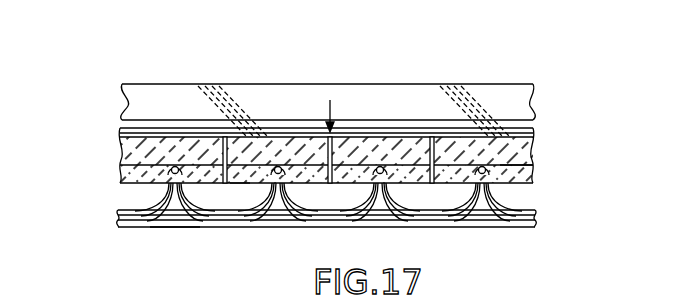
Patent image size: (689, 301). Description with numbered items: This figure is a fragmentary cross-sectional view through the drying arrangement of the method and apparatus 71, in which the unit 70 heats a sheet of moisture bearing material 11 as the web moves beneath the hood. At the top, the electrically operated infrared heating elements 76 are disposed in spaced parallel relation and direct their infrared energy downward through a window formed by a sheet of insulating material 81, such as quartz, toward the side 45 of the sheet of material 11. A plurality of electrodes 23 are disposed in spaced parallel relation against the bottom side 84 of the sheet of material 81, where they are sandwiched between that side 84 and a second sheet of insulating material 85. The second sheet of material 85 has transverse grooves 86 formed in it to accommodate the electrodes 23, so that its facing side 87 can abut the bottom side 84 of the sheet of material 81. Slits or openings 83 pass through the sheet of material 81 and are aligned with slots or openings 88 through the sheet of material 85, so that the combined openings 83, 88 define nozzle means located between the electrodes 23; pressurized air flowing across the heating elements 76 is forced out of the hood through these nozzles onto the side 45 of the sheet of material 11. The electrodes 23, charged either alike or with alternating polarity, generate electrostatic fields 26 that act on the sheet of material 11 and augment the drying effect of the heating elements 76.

The unit 70 is at (540, 76).
The method and apparatus 71 is at (402, 74).
The infrared heating elements 76 is at (258, 95).
The sheet of insulating material 81 is at (177, 140).
The slits or openings 83 is at (214, 137).
The bottom side 84 is at (123, 172).
The sheet of insulating material 85 is at (525, 190).
The transverse grooves 86 is at (528, 175).
The facing side 87 is at (362, 140).
The slots or openings 88 is at (236, 185).
The electrodes 23 is at (174, 167).
The side 45 is at (130, 210).
The sheet of moisture bearing material 11 is at (168, 226).
The electrostatic fields 26 is at (480, 226).